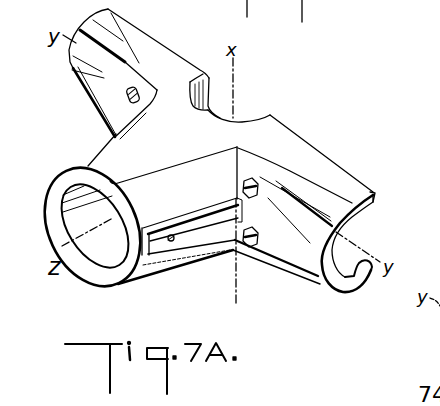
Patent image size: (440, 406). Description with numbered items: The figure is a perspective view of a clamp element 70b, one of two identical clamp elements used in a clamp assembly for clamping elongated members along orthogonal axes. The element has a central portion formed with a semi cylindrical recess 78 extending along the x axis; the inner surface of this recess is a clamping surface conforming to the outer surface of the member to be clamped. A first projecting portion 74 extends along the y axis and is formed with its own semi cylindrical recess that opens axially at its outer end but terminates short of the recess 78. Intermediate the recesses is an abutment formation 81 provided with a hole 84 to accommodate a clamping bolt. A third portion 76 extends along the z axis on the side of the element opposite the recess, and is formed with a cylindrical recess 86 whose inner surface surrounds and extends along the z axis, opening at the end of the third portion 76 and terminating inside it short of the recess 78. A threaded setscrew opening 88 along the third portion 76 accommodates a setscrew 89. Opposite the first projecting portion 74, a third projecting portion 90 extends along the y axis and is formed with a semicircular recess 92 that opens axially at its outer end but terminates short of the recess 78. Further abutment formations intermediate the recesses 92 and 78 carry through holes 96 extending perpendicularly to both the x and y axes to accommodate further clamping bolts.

The clamp element 70b is at (341, 159).
The first projecting portion 74 is at (101, 110).
The third portion 76 is at (83, 153).
The semi cylindrical recess 78 is at (246, 106).
The abutment formation 81 is at (204, 82).
The hole 84 is at (138, 88).
The cylindrical recess 86 is at (102, 257).
The threaded setscrew opening 88 is at (170, 241).
The setscrew 89 is at (176, 230).
The third projecting portion 90 is at (316, 285).
The semicircular recess 92 is at (372, 272).
The through hole 96 is at (258, 188).